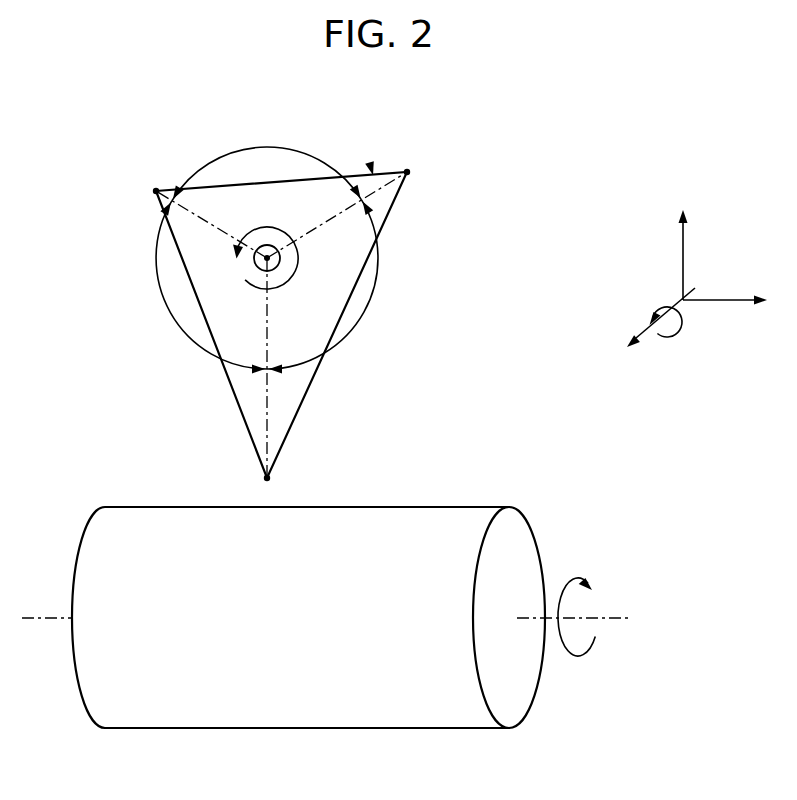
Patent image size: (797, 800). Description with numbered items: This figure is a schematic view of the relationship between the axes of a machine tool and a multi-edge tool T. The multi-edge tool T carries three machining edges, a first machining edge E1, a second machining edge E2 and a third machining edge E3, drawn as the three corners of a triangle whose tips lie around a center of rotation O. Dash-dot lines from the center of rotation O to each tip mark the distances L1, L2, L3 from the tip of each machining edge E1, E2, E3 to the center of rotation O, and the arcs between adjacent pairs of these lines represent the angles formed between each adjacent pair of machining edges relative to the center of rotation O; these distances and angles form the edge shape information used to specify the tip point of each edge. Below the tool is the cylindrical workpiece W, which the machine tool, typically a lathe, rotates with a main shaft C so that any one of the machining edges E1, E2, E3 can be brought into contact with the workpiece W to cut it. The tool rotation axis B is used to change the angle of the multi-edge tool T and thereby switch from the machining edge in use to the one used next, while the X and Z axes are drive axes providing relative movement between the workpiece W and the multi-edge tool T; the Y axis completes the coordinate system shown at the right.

The multi-edge tool T is at (371, 163).
The center of rotation O is at (268, 244).
The first machining edge E1 is at (268, 478).
The second machining edge E2 is at (156, 191).
The third machining edge E3 is at (407, 172).
The distance from tip of first machining edge to center of rotation L1 is at (283, 368).
The distance from tip of second machining edge to center of rotation L2 is at (211, 224).
The distance from tip of third machining edge to center of rotation L3 is at (337, 215).
The workpiece W is at (434, 507).
The main shaft C is at (576, 603).
The tool rotation axis B is at (667, 338).
The X axis X is at (683, 241).
The Y axis Y is at (651, 330).
The Z axis Z is at (725, 313).